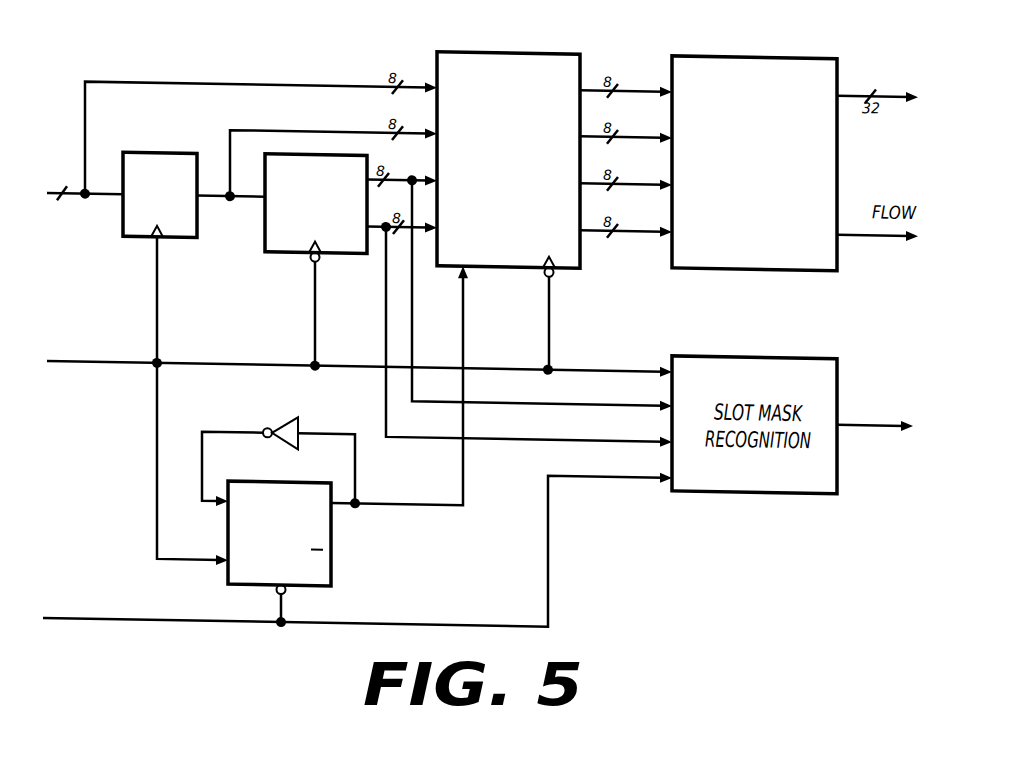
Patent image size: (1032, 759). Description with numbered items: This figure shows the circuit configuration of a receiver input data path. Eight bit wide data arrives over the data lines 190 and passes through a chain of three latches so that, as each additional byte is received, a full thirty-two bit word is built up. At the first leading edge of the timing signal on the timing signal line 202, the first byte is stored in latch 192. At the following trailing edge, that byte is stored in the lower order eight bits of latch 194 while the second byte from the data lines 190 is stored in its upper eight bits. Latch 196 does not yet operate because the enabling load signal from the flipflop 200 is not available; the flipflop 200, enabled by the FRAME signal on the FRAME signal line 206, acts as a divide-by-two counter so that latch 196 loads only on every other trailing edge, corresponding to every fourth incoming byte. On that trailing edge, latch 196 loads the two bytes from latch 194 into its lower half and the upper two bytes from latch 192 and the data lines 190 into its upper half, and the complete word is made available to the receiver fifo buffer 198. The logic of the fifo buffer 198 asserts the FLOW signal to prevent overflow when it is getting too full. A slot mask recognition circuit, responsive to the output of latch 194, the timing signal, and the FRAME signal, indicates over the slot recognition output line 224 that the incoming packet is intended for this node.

The data lines 190 is at (58, 196).
The latch 192 is at (177, 207).
The latch 194 is at (331, 218).
The latch 196 is at (527, 158).
The fifo buffer 198 is at (775, 214).
The flipflop 200 is at (331, 564).
The timing signal line 202 is at (77, 369).
The FRAME signal line 206 is at (112, 627).
The slot recognition output line 224 is at (864, 410).